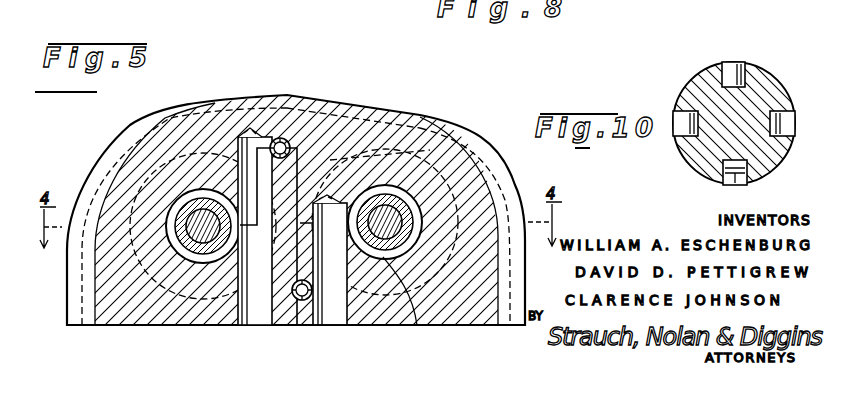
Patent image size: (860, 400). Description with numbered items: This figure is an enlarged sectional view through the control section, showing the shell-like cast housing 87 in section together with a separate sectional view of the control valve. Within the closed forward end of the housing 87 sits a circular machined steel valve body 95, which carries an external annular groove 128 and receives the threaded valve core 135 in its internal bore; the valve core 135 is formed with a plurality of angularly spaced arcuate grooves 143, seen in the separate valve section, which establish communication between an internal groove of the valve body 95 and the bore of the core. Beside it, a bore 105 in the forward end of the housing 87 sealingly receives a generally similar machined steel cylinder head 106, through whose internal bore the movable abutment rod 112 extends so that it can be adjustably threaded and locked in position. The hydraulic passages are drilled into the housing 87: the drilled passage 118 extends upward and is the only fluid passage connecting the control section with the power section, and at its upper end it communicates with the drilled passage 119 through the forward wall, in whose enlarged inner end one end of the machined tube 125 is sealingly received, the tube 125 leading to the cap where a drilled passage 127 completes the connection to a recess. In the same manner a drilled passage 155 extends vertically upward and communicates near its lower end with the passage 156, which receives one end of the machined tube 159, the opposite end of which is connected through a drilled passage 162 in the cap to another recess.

In FIG. 5, the cast housing 87 is at (220, 108).
In FIG. 5, the machined tube 125 is at (279, 137).
In FIG. 5, the drilled passage 119 is at (319, 128).
In FIG. 5, the drilled passage 127 is at (316, 150).
In FIG. 5, the cylinder head 106 is at (370, 178).
In FIG. 5, the bore 105 is at (404, 188).
In FIG. 5, the drilled passage 162 is at (378, 246).
In FIG. 5, the valve core 135 is at (203, 190).
In FIG. 10, the valve core 135 is at (791, 112).
In FIG. 5, the valve body 95 is at (183, 256).
In FIG. 5, the annular groove 128 is at (221, 258).
In FIG. 5, the drilled passage 118 is at (259, 323).
In FIG. 5, the passage 156 is at (290, 312).
In FIG. 5, the machined tube 159 is at (320, 322).
In FIG. 5, the drilled passage 155 is at (344, 325).
In FIG. 5, the movable abutment rod 112 is at (417, 325).
In FIG. 10, the arcuate grooves 143 is at (735, 68).